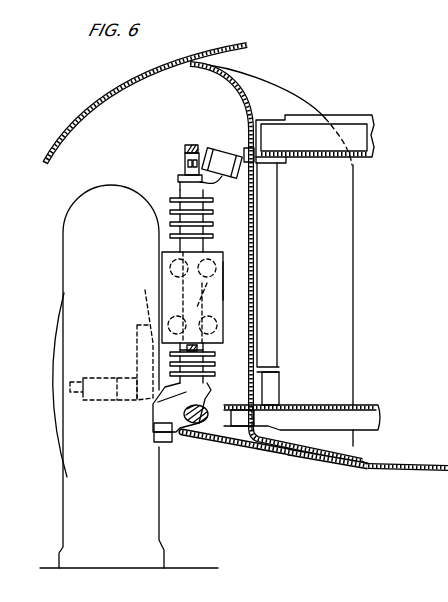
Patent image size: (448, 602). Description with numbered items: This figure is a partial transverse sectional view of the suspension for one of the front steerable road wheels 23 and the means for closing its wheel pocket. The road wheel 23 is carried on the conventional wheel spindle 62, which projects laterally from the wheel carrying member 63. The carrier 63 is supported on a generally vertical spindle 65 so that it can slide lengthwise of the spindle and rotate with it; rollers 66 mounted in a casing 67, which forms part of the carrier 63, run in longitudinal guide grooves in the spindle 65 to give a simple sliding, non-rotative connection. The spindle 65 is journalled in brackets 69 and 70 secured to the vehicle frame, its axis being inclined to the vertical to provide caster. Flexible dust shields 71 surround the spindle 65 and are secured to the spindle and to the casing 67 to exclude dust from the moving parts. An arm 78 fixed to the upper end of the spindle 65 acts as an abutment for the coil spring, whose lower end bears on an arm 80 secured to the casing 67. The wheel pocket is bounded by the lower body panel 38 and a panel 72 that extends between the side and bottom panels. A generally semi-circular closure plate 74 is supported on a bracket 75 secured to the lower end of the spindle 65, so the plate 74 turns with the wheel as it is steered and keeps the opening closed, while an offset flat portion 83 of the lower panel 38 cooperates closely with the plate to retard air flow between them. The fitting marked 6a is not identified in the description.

The front steerable road wheel 23 is at (72, 258).
The lower body panel 38 is at (407, 472).
The fastener 6a is at (219, 180).
The wheel spindle 62 is at (95, 376).
The wheel carrying member 63 is at (137, 328).
The vertical spindle 65 is at (228, 287).
The rollers 66 is at (163, 287).
The casing 67 is at (162, 258).
The upper bracket 69 is at (232, 172).
The lower bracket 70 is at (196, 408).
The flexible dust shields 71 is at (214, 221).
The panel 72 is at (257, 288).
The closure plate 74 is at (319, 461).
The bracket 75 is at (208, 444).
The arm 78 is at (185, 150).
The arm 80 is at (218, 347).
The offset flat portion 83 is at (343, 460).